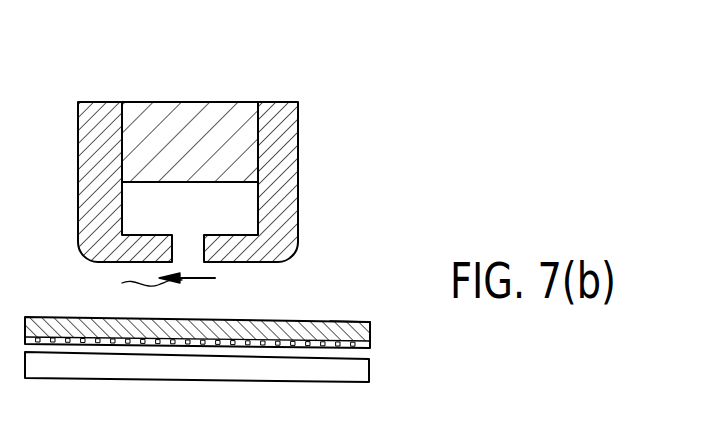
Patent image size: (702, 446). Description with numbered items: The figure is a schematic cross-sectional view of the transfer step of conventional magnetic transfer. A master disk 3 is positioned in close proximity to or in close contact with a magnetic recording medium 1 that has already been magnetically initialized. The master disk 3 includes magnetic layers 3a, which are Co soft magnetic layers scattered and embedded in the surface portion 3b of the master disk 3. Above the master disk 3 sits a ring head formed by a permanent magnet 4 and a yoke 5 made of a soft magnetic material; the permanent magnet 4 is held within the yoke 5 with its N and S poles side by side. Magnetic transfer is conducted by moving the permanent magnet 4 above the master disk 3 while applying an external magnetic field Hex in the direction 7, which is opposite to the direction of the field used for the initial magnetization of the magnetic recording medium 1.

The magnetic recording medium 1 is at (371, 366).
The master disk 3 is at (200, 351).
The magnetic layers 3a is at (356, 322).
The surface portion 3b is at (163, 345).
The permanent magnet 4 is at (176, 110).
The yoke 5 is at (273, 108).
The direction 7 is at (160, 282).